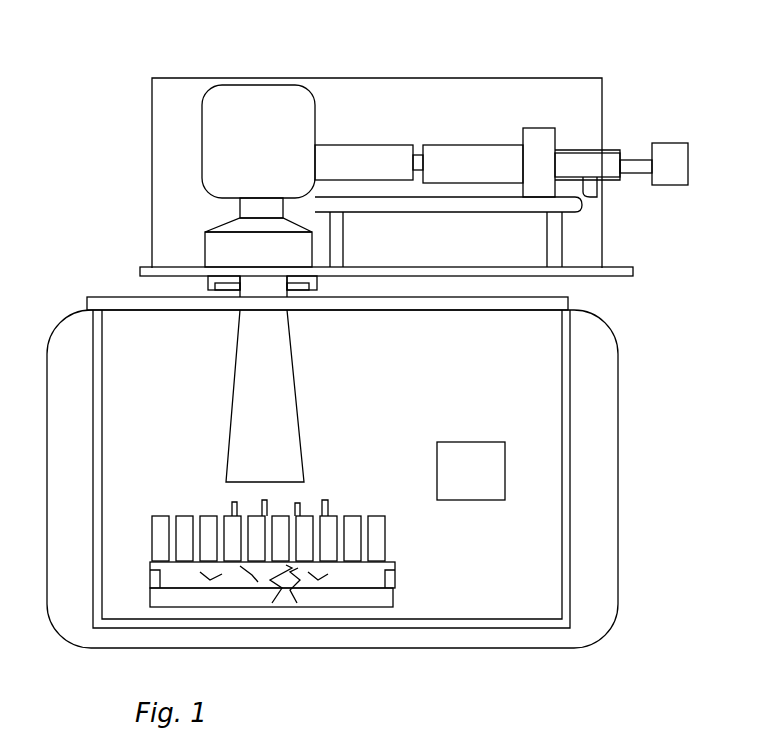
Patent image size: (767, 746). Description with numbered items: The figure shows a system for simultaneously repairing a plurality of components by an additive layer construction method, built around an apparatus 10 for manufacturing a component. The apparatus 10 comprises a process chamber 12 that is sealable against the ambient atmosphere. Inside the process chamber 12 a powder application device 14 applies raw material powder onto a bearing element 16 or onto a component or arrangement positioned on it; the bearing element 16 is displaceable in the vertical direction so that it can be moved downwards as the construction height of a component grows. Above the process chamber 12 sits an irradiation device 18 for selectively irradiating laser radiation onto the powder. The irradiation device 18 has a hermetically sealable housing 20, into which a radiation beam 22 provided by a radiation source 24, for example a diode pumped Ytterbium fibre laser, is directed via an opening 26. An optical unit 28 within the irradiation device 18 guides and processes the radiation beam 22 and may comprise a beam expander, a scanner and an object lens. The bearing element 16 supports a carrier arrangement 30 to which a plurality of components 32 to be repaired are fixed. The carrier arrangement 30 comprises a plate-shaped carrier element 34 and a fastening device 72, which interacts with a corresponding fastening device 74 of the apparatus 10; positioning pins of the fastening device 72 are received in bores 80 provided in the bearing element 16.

The apparatus 10 is at (698, 236).
The process chamber 12 is at (605, 347).
The powder application device 14 is at (470, 442).
The bearing element 16 is at (362, 607).
The irradiation device 18 is at (664, 112).
The housing 20 is at (572, 78).
The radiation beam 22 is at (597, 190).
The radiation source 24 is at (680, 160).
The opening 26 is at (604, 162).
The optical unit 28 is at (450, 122).
The carrier arrangement 30 is at (436, 566).
The components 32 is at (355, 507).
The carrier element 34 is at (395, 577).
The fastening device 72 is at (255, 576).
The fastening device 74 is at (275, 602).
The bores 80 is at (230, 608).